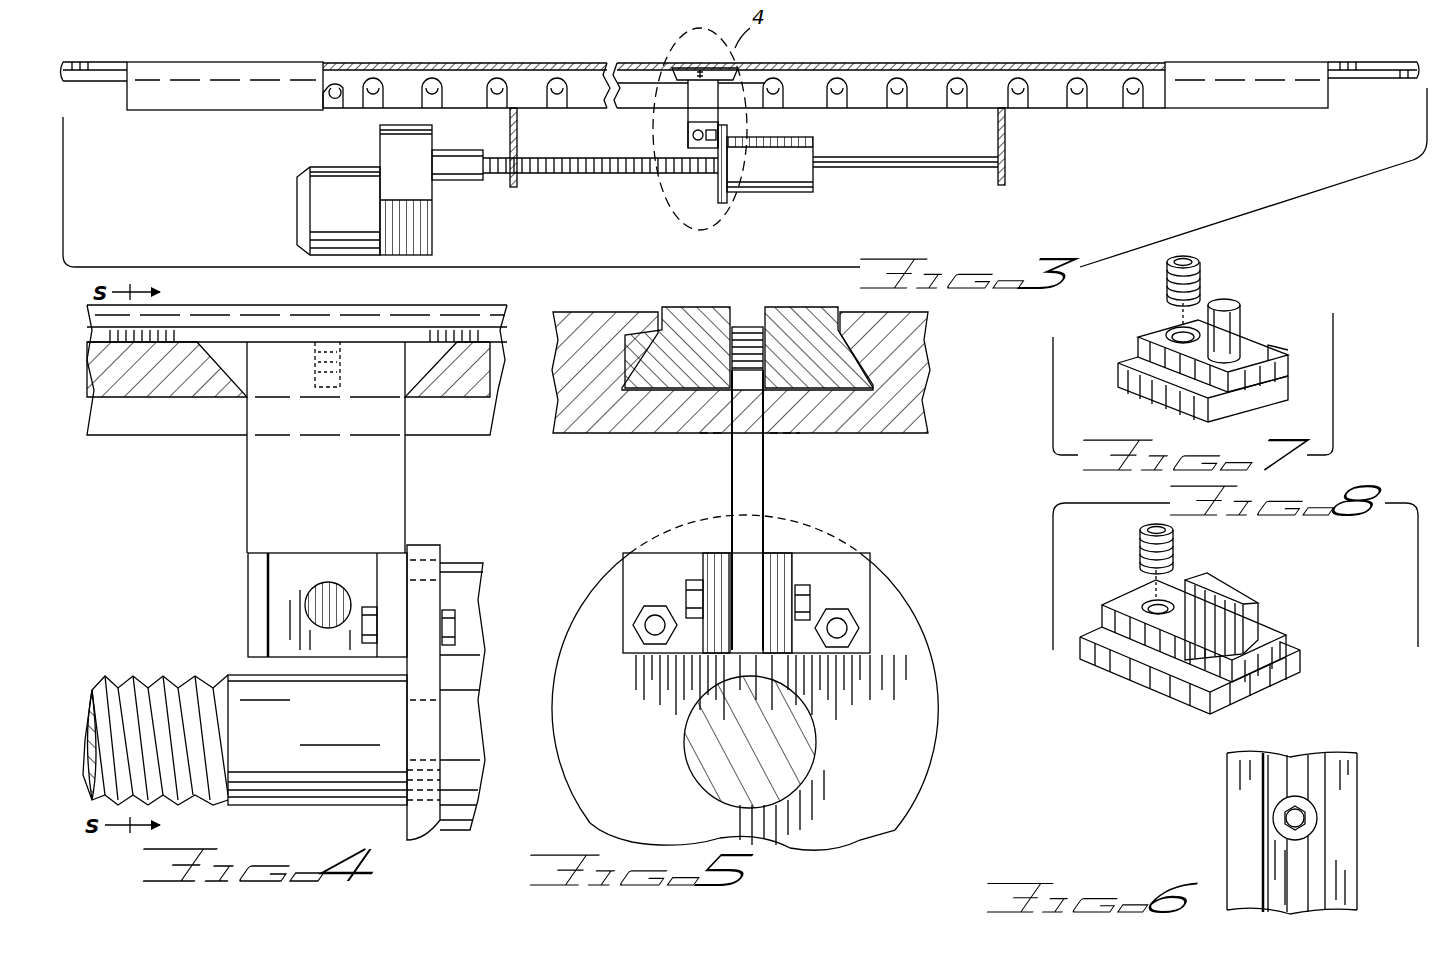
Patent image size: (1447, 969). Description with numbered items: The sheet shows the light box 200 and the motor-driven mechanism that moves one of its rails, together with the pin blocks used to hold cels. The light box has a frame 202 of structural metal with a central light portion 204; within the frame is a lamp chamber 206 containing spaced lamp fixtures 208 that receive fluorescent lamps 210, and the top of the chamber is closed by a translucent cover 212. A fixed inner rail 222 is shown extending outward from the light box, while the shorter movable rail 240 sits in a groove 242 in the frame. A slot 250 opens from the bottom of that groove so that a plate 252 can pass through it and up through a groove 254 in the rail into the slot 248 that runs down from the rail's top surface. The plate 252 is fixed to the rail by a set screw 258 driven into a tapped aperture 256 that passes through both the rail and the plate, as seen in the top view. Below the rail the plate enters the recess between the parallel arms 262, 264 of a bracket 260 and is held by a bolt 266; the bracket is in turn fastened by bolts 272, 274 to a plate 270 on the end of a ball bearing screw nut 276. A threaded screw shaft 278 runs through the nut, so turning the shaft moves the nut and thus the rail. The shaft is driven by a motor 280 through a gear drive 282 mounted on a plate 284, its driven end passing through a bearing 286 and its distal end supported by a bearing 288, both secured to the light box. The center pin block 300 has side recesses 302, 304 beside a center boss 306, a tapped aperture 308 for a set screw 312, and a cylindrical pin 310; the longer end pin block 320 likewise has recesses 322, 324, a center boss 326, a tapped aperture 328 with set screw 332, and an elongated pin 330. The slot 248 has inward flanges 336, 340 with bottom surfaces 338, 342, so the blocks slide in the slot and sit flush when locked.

In FIG. 3, the light box 200 is at (1248, 116).
In FIG. 3, the frame 202 is at (617, 63).
In FIG. 4, the frame 202 is at (420, 335).
In FIG. 5, the frame 202 is at (926, 376).
In FIG. 3, the central light portion 204 is at (327, 112).
In FIG. 3, the lamp chamber 206 is at (1105, 88).
In FIG. 3, the lamp fixtures 208 is at (1012, 75).
In FIG. 3, the lamps 210 is at (427, 86).
In FIG. 3, the cover 212 is at (507, 63).
In FIG. 3, the fixed inner rail 222 is at (93, 64).
In FIG. 3, the outboard rail 240 is at (693, 50).
In FIG. 4, the outboard rail 240 is at (308, 301).
In FIG. 5, the outboard rail 240 is at (668, 302).
In FIG. 6, the outboard rail 240 is at (1345, 795).
In FIG. 5, the groove 242 is at (658, 314).
In FIG. 4, the slot 248 is at (333, 335).
In FIG. 5, the slot 248 is at (745, 328).
In FIG. 6, the slot 248 is at (1312, 768).
In FIG. 5, the slot 250 is at (735, 440).
In FIG. 3, the plate 252 is at (688, 116).
In FIG. 4, the plate 252 is at (398, 486).
In FIG. 5, the plate 252 is at (763, 484).
In FIG. 6, the plate 252 is at (1290, 768).
In FIG. 5, the groove 254 is at (762, 382).
In FIG. 4, the tapped aperture 256 is at (315, 362).
In FIG. 6, the tapped aperture 256 is at (1275, 820).
In FIG. 4, the set screw 258 is at (345, 373).
In FIG. 5, the set screw 258 is at (775, 328).
In FIG. 6, the set screw 258 is at (1318, 820).
In FIG. 4, the bracket 260 is at (390, 563).
In FIG. 5, the bracket 260 is at (845, 565).
In FIG. 4, the arm 262 is at (268, 603).
In FIG. 5, the arm 262 is at (775, 553).
In FIG. 5, the arm 264 is at (715, 553).
In FIG. 4, the bolt 266 is at (335, 590).
In FIG. 5, the bolt 266 is at (688, 600).
In FIG. 3, the plate 270 is at (717, 183).
In FIG. 4, the plate 270 is at (405, 828).
In FIG. 5, the plate 270 is at (880, 633).
In FIG. 4, the bolt 272 is at (455, 626).
In FIG. 5, the bolt 272 is at (850, 649).
In FIG. 5, the bolt 274 is at (653, 646).
In FIG. 3, the ball bearing screw nut 276 is at (773, 192).
In FIG. 4, the ball bearing screw nut 276 is at (482, 575).
In FIG. 3, the threaded screw shaft 278 is at (590, 175).
In FIG. 4, the threaded screw shaft 278 is at (152, 690).
In FIG. 5, the threaded screw shaft 278 is at (805, 763).
In FIG. 3, the motor 280 is at (305, 167).
In FIG. 3, the gear drive 282 is at (383, 128).
In FIG. 3, the plate 284 is at (432, 148).
In FIG. 3, the bearing 286 is at (517, 133).
In FIG. 3, the bearing 288 is at (1005, 126).
In FIG. 7, the center pin block 300 is at (1193, 336).
In FIG. 7, the side recess 302 is at (1275, 350).
In FIG. 7, the side recess 304 is at (1130, 366).
In FIG. 7, the center boss 306 is at (1150, 337).
In FIG. 7, the tapped aperture 308 is at (1178, 328).
In FIG. 7, the cylindrical pin 310 is at (1238, 312).
In FIG. 7, the set screw 312 is at (1202, 282).
In FIG. 8, the end pin block 320 is at (1212, 617).
In FIG. 8, the side recess 322 is at (1282, 656).
In FIG. 8, the side recess 324 is at (1100, 640).
In FIG. 8, the center boss 326 is at (1130, 600).
In FIG. 8, the tapped aperture 328 is at (1152, 600).
In FIG. 8, the elongated pin 330 is at (1232, 592).
In FIG. 8, the set screw 332 is at (1178, 550).
In FIG. 5, the inwardly extending flange 336 is at (780, 340).
In FIG. 5, the bottom surface 338 is at (778, 362).
In FIG. 4, the inwardly extending flange 340 is at (222, 320).
In FIG. 5, the inwardly extending flange 340 is at (700, 328).
In FIG. 4, the bottom surface 342 is at (165, 335).
In FIG. 5, the bottom surface 342 is at (677, 347).